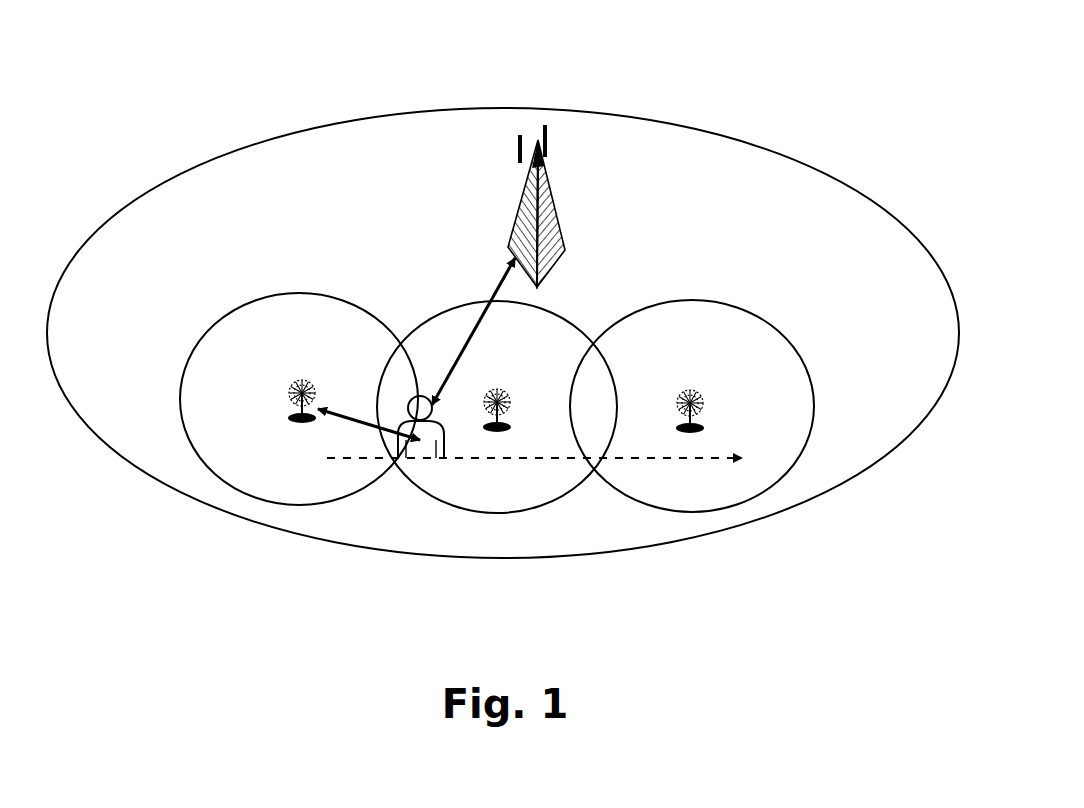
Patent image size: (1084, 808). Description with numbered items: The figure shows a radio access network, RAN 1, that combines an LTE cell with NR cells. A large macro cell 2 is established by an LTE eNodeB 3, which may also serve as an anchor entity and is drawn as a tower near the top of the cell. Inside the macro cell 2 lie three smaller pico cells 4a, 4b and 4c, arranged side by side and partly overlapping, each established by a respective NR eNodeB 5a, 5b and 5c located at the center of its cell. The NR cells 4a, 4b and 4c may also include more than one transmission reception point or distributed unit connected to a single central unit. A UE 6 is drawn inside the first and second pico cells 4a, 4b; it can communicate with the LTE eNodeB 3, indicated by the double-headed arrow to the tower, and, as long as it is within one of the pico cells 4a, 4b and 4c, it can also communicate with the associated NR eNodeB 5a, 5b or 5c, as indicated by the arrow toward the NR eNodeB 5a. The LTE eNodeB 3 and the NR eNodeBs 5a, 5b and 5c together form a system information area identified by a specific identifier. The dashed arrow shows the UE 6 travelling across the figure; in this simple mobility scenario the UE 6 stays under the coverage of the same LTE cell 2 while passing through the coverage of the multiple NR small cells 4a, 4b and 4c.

The radio access network 1 is at (633, 70).
The macro cell 2 is at (490, 108).
The LTE eNodeB 3 is at (550, 228).
The pico cell 4a is at (299, 293).
The pico cell 4b is at (560, 310).
The pico cell 4c is at (712, 302).
The NR eNodeB 5a is at (292, 385).
The NR eNodeB 5b is at (505, 392).
The NR eNodeB 5c is at (700, 398).
The UE 6 is at (412, 450).